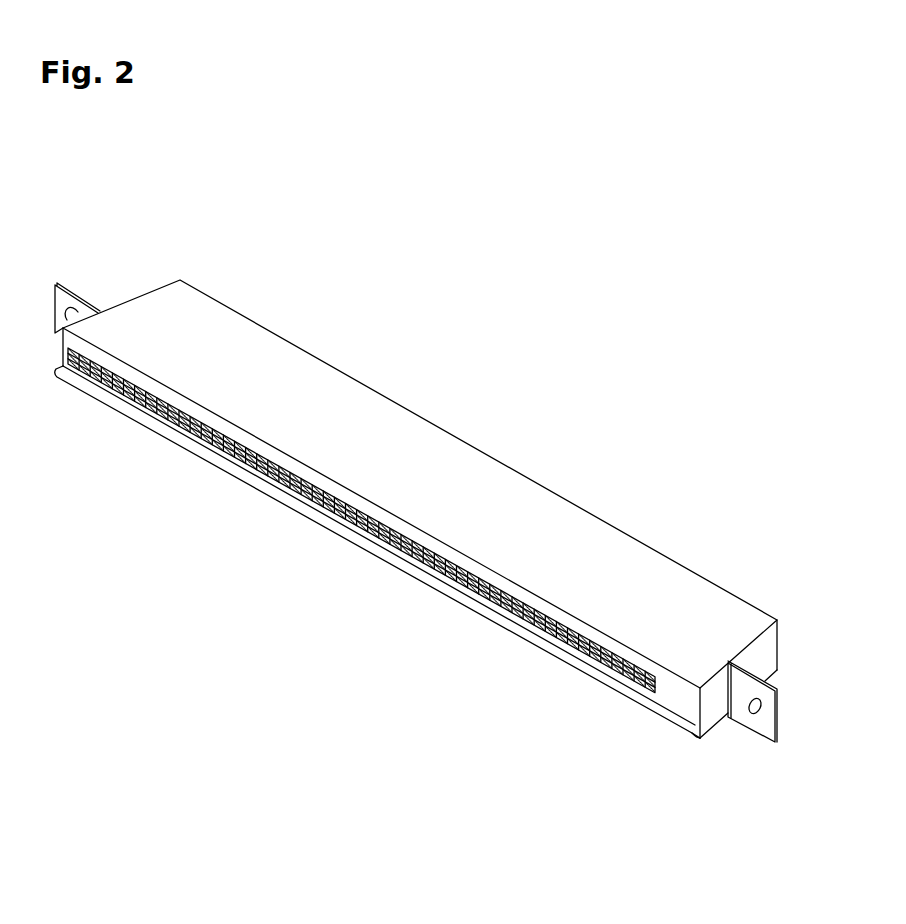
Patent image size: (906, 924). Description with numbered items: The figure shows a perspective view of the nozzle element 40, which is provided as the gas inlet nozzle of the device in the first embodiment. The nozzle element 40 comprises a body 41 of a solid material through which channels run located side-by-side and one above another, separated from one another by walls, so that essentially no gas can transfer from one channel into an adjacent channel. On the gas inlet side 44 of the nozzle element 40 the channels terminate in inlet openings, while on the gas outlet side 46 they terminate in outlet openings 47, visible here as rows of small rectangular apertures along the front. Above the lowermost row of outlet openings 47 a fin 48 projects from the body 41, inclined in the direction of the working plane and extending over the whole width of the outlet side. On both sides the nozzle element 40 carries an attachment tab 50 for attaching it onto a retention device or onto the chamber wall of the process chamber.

The nozzle element 40 is at (416, 509).
The body 41 is at (258, 337).
The gas inlet side 44 is at (478, 445).
The gas outlet side 46 is at (387, 565).
The outlet openings 47 is at (170, 427).
The fin 48 is at (662, 710).
The attachment tab 50 is at (80, 292).